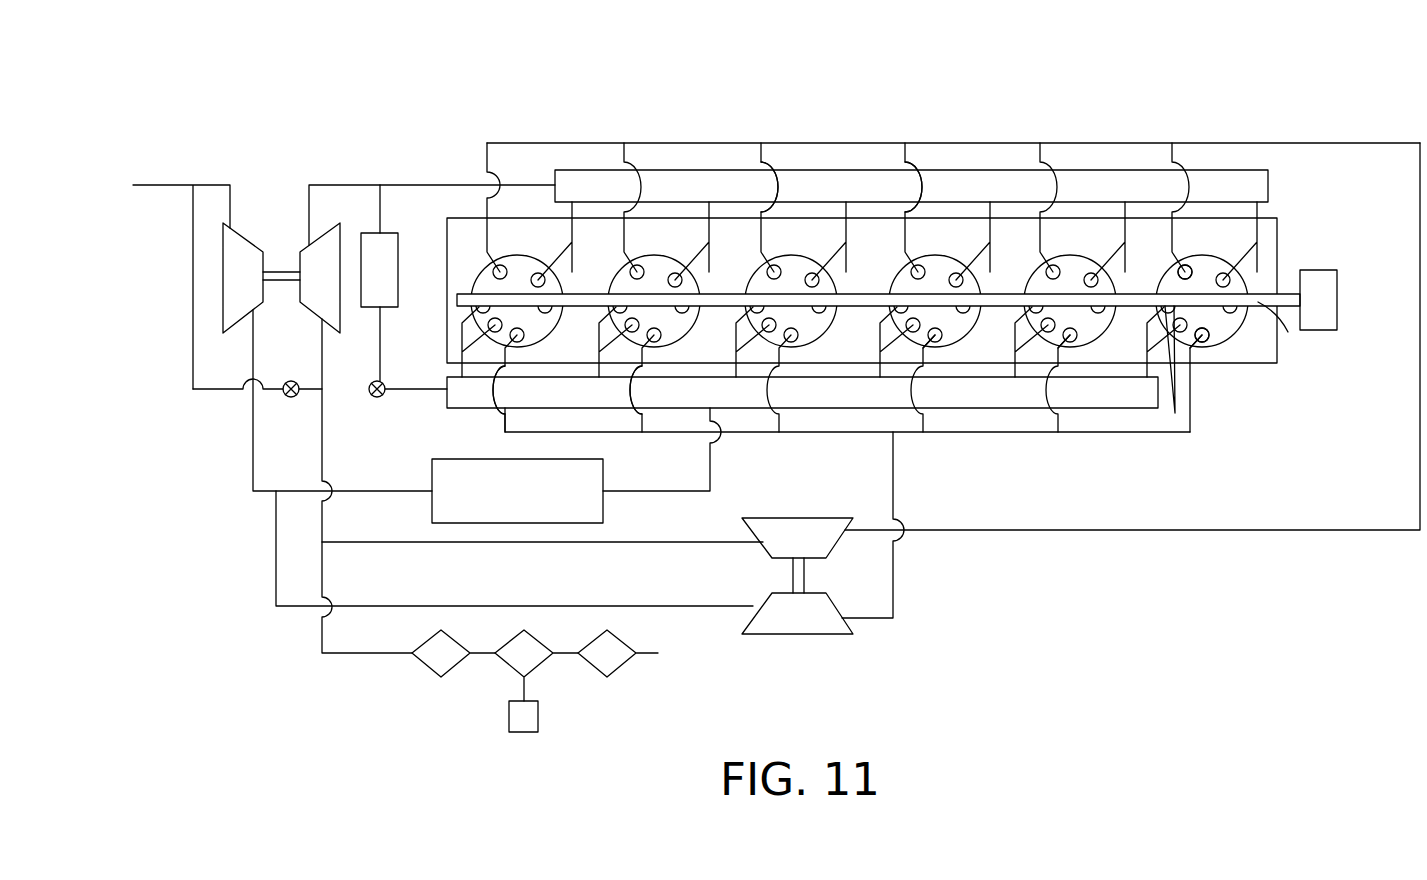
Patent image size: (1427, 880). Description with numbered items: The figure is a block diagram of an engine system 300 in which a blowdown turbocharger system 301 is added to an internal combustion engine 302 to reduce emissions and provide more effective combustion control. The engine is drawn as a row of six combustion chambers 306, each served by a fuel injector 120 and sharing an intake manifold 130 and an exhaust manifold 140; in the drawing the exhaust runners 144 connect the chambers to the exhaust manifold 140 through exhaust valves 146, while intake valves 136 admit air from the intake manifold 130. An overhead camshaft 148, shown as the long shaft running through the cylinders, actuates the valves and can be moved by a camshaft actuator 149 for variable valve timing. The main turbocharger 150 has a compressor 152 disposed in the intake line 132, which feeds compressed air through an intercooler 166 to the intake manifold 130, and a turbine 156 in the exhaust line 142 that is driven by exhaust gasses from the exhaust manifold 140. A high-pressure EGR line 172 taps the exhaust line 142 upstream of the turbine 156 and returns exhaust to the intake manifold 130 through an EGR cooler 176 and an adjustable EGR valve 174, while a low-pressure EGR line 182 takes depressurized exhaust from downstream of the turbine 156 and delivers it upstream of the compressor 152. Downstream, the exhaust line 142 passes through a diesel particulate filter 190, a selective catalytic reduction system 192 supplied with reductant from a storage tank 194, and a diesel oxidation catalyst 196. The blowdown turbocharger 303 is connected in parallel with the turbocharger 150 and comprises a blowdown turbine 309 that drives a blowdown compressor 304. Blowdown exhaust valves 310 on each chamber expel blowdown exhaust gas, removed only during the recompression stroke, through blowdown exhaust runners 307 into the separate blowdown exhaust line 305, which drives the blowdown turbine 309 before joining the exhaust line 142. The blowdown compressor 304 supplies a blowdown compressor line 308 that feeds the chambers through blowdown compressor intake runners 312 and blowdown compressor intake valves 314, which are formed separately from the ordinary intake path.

The engine system 300 is at (1252, 60).
The blowdown turbocharger system 301 is at (962, 578).
The internal combustion engine 302 is at (1289, 389).
The blowdown turbocharger 303 is at (750, 581).
The blowdown compressor 304 is at (1260, 348).
The blowdown exhaust line 305 is at (713, 140).
The combustion chamber 306 is at (1060, 345).
The blowdown exhaust runner 307 is at (768, 157).
The blowdown compressor line 308 is at (1190, 412).
The blowdown turbine 309 is at (808, 538).
The blowdown exhaust valve 310 is at (1185, 270).
The blowdown compressor intake runner 312 is at (499, 380).
The blowdown compressor intake valve 314 is at (1208, 343).
The fuel injector 120 is at (1145, 365).
The intake manifold 130 is at (1093, 395).
The intake line 132 is at (172, 185).
The intake valve 136 is at (1175, 413).
The exhaust manifold 140 is at (1090, 183).
The exhaust line 142 is at (333, 185).
The exhaust runner 144 is at (1260, 225).
The exhaust valve 146 is at (1237, 304).
The overhead camshaft 148 is at (1288, 332).
The camshaft actuator 149 is at (1328, 305).
The turbocharger 150 is at (282, 210).
The compressor 152 is at (237, 271).
The turbine 156 is at (313, 298).
The intercooler 166 is at (598, 497).
The high-pressure EGR line 172 is at (380, 198).
The adjustable EGR valve 174 is at (382, 400).
The EGR cooler 176 is at (387, 293).
The low-pressure EGR line 182 is at (192, 333).
The diesel particulate filter 190 is at (441, 660).
The selective catalytic reduction system 192 is at (528, 660).
The storage tank 194 is at (517, 717).
The diesel oxidation catalyst 196 is at (612, 660).